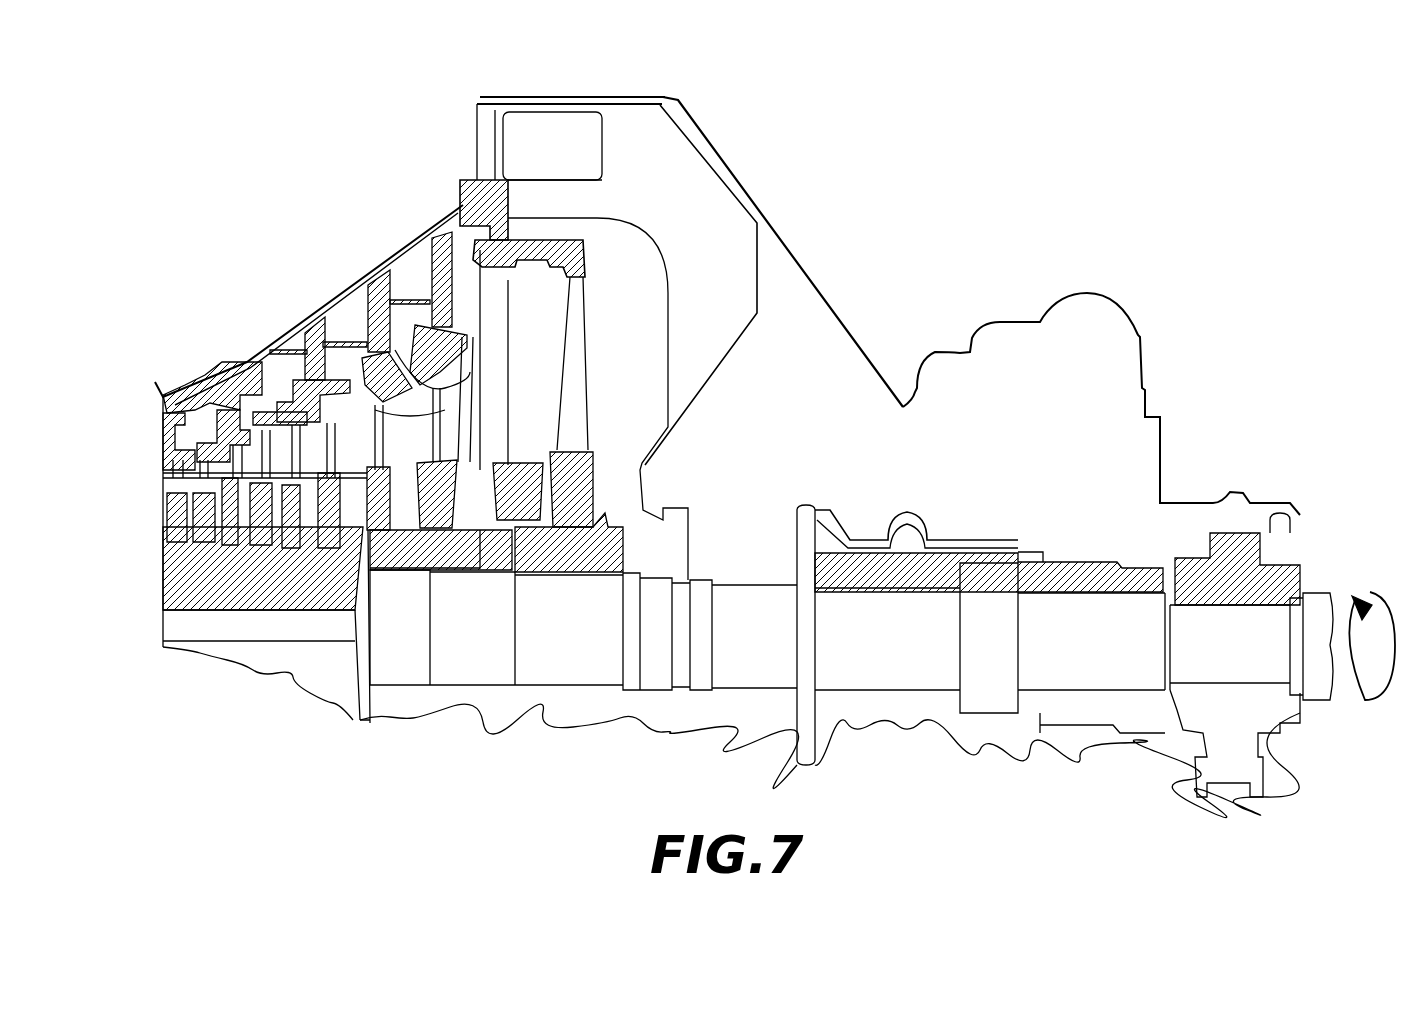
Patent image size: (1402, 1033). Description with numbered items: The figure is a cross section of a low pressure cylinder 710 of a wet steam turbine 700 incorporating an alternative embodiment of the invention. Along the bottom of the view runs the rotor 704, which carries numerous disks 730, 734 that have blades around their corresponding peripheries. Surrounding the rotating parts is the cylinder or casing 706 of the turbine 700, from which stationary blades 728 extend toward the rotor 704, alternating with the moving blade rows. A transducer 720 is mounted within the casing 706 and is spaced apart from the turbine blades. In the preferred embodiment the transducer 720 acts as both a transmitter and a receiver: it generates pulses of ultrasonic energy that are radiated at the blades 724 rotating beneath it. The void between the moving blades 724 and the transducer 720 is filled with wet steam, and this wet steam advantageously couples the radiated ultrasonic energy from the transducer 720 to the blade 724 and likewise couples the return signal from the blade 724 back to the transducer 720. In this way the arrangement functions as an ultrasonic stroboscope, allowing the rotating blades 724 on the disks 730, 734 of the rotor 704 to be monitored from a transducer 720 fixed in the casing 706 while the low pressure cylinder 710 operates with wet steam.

The wet steam turbine 700 is at (1048, 218).
The rotor 704 is at (1265, 525).
The casing 706 is at (663, 105).
The low pressure cylinder 710 is at (690, 75).
The transducer 720 is at (423, 300).
The blades 724 is at (368, 298).
The stationary blades 728 is at (365, 400).
The disk 730 is at (545, 472).
The disk 734 is at (580, 527).